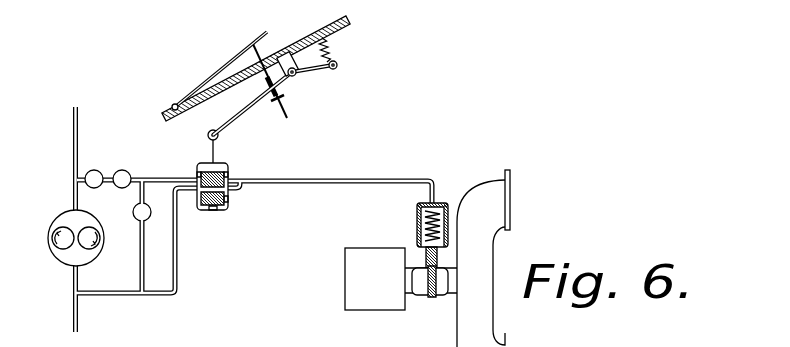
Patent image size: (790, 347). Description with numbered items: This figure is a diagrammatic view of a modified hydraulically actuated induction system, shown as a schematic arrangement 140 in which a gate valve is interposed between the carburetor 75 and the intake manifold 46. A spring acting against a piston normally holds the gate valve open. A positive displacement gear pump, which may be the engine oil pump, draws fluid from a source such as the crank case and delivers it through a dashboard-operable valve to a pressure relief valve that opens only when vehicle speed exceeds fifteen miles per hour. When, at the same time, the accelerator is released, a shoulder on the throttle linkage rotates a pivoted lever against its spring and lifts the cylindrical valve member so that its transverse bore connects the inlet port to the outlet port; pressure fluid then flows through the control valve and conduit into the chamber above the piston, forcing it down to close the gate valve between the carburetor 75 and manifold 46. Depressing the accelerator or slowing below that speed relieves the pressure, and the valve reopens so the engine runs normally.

The intake manifold 46 is at (478, 190).
The carburetor 75 is at (345, 272).
The control system 140 is at (187, 339).